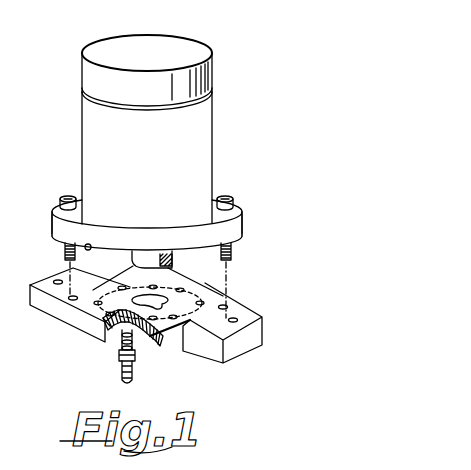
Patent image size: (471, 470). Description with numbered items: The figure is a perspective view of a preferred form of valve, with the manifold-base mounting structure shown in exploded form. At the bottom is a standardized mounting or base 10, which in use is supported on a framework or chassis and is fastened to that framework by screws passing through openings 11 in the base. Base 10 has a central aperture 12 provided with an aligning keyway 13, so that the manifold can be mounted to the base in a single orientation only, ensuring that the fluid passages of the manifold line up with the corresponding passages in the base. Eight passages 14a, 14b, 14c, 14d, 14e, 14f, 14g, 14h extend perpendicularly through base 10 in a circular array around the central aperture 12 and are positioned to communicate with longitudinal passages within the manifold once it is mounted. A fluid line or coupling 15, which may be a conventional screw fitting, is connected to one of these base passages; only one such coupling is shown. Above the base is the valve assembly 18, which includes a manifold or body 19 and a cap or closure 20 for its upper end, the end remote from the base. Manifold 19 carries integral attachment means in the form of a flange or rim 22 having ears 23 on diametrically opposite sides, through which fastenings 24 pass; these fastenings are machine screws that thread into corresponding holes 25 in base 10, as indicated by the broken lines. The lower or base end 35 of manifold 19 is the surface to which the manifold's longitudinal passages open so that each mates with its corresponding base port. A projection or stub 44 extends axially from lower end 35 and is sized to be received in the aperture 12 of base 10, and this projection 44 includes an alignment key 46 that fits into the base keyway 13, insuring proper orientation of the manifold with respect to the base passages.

The base 10 is at (268, 333).
The openings 11 is at (57, 280).
The central aperture 12 is at (169, 301).
The aligning keyway 13 is at (163, 310).
The passage 14a is at (152, 346).
The passage 14b is at (97, 325).
The passage 14c is at (98, 301).
The passage 14d is at (122, 286).
The passage 14e is at (153, 285).
The passage 14f is at (183, 291).
The passage 14g is at (202, 306).
The passage 14h is at (184, 338).
The fluid coupling 15 is at (120, 376).
The valve assembly 18 is at (250, 97).
The manifold 19 is at (213, 140).
The cap 20 is at (147, 50).
The flange 22 is at (112, 235).
The ears 23 is at (57, 223).
The fastenings 24 is at (68, 198).
The holes 25 is at (78, 305).
The lower end 35 is at (89, 243).
The projection 44 is at (150, 250).
The alignment key 46 is at (173, 266).